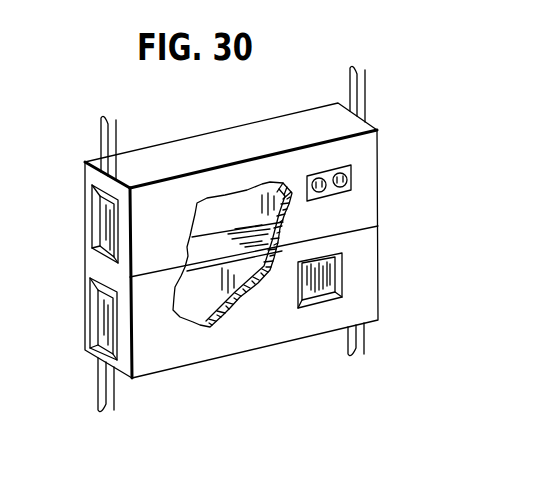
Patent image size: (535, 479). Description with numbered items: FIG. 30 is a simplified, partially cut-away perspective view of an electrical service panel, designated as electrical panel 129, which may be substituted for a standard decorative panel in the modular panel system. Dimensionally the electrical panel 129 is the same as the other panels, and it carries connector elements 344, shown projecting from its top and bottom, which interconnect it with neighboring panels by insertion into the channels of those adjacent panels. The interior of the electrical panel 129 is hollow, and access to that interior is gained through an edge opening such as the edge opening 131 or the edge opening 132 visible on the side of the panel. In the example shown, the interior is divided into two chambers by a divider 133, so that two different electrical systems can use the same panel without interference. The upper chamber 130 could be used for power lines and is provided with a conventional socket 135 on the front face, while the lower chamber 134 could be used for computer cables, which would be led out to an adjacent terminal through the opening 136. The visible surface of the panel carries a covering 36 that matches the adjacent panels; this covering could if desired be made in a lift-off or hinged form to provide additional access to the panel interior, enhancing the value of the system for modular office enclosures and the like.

The electrical panel 129 is at (234, 116).
The upper chamber 130 is at (250, 220).
The edge opening 131 is at (110, 222).
The edge opening 132 is at (103, 317).
The divider 133 is at (186, 244).
The lower chamber 134 is at (213, 302).
The conventional socket 135 is at (352, 178).
The opening 136 is at (333, 280).
The covering 36 is at (275, 327).
The connector elements 344 is at (100, 130).